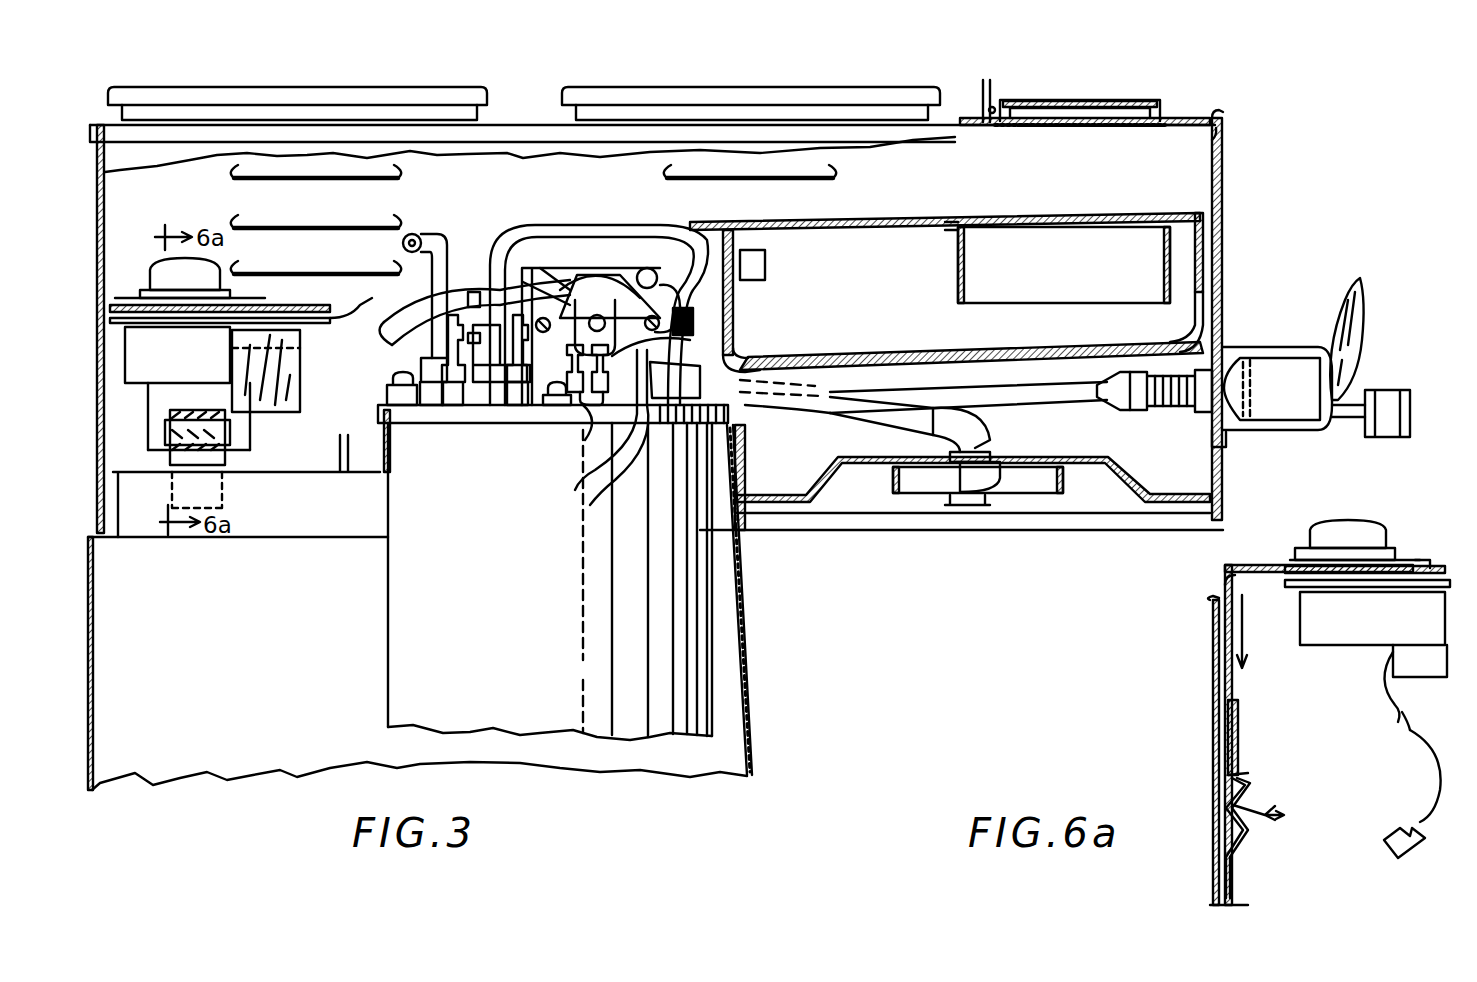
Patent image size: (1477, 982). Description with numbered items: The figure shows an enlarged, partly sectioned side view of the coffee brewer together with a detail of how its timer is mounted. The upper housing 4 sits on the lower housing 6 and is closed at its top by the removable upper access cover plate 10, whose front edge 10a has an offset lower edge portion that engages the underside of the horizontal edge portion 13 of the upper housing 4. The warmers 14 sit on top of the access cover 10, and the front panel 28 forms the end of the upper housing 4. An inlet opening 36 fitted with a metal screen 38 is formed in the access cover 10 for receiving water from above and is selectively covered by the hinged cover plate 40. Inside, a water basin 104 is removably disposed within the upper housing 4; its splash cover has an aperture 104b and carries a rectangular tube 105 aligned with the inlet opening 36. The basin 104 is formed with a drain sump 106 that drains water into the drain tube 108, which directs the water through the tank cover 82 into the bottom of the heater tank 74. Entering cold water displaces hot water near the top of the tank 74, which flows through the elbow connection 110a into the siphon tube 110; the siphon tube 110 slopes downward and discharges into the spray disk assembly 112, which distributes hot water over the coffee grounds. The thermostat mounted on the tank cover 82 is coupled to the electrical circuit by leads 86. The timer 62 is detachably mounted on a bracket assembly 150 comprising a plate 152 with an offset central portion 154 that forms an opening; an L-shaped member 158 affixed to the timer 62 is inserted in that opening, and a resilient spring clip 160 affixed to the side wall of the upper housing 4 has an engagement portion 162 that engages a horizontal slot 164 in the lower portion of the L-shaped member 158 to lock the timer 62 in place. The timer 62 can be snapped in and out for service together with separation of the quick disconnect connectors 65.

In FIG. 3, the upper housing 4 is at (97, 196).
In FIG. 3, the lower housing 6 is at (88, 560).
In FIG. 3, the upper access cover plate 10 is at (533, 125).
In FIG. 3, the front edge of access cover 10a is at (1223, 138).
In FIG. 3, the horizontal edge portion 13 is at (1222, 118).
In FIG. 3, the warmers 14 is at (252, 88).
In FIG. 3, the front panel 28 is at (1225, 200).
In FIG. 3, the inlet opening 36 is at (1100, 128).
In FIG. 3, the metal screen 38 is at (1080, 130).
In FIG. 3, the hinged cover plate 40 is at (1060, 98).
In FIG. 3, the timer 62 is at (241, 354).
In FIG. 6a, the timer 62 is at (1367, 598).
In FIG. 6a, the quick disconnect connectors 65 is at (1388, 820).
In FIG. 3, the heater tank 74 is at (388, 608).
In FIG. 3, the tank cover 82 is at (340, 432).
In FIG. 3, the leads 86 is at (597, 318).
In FIG. 3, the water basin 104 is at (910, 222).
In FIG. 3, the aperture 104b is at (975, 222).
In FIG. 3, the rectangular tube 105 is at (958, 268).
In FIG. 3, the drain sump 106 is at (755, 352).
In FIG. 3, the drain tube 108 is at (590, 466).
In FIG. 3, the siphon tube 110 is at (800, 410).
In FIG. 3, the elbow connection 110a is at (600, 496).
In FIG. 3, the spray disk assembly 112 is at (1035, 470).
In FIG. 6a, the bracket assembly 150 is at (1252, 694).
In FIG. 6a, the plate 152 is at (1240, 732).
In FIG. 6a, the offset central portion 154 is at (1240, 775).
In FIG. 6a, the L-shaped member 158 is at (1225, 572).
In FIG. 3, the resilient spring clip 160 is at (583, 430).
In FIG. 6a, the resilient spring clip 160 is at (1245, 823).
In FIG. 6a, the engagement portion 162 is at (1228, 808).
In FIG. 6a, the horizontal slot 164 is at (1242, 668).